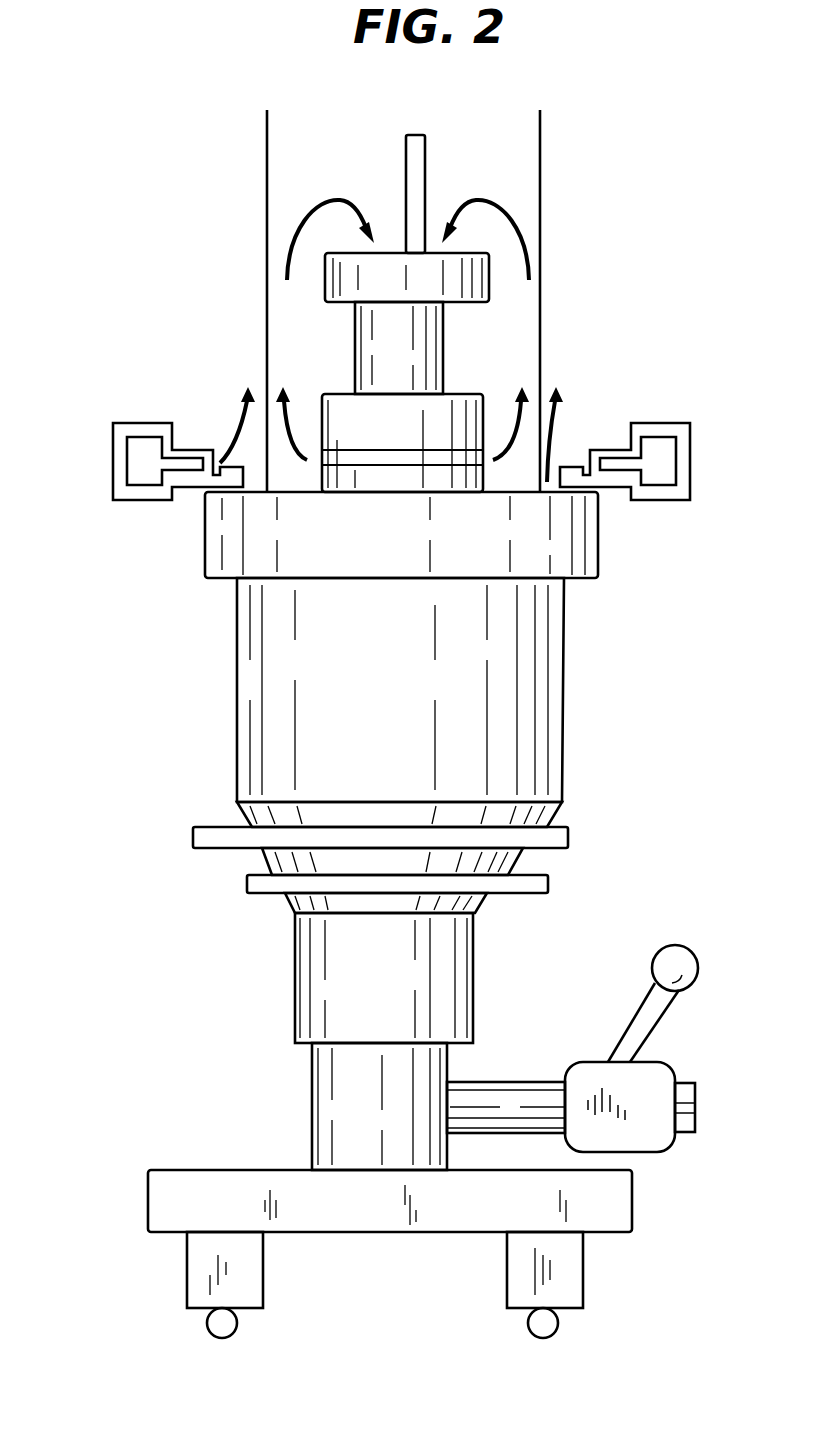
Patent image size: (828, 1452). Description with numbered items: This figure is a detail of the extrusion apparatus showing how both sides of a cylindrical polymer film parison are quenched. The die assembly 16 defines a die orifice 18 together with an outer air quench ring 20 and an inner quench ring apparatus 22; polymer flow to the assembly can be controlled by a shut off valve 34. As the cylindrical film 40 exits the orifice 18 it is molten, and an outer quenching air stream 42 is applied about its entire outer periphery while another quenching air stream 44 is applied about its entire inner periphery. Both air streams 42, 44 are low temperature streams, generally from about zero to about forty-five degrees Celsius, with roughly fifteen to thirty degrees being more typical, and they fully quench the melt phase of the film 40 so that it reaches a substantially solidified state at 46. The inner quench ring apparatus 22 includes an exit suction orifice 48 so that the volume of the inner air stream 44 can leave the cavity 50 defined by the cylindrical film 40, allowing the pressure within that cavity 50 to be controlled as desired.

The die assembly 16 is at (564, 678).
The die orifice 18 is at (583, 467).
The outer air quench ring 20 is at (113, 462).
The inner quench ring apparatus 22 is at (392, 253).
The shut off valve 34 is at (675, 1145).
The cylindrical film 40 is at (267, 172).
The outer quenching air stream 42 is at (237, 437).
The inner quenching air stream 44 is at (324, 423).
The substantially solidified state 46 is at (541, 172).
The exit suction orifice 48 is at (432, 253).
The cavity 50 is at (318, 352).